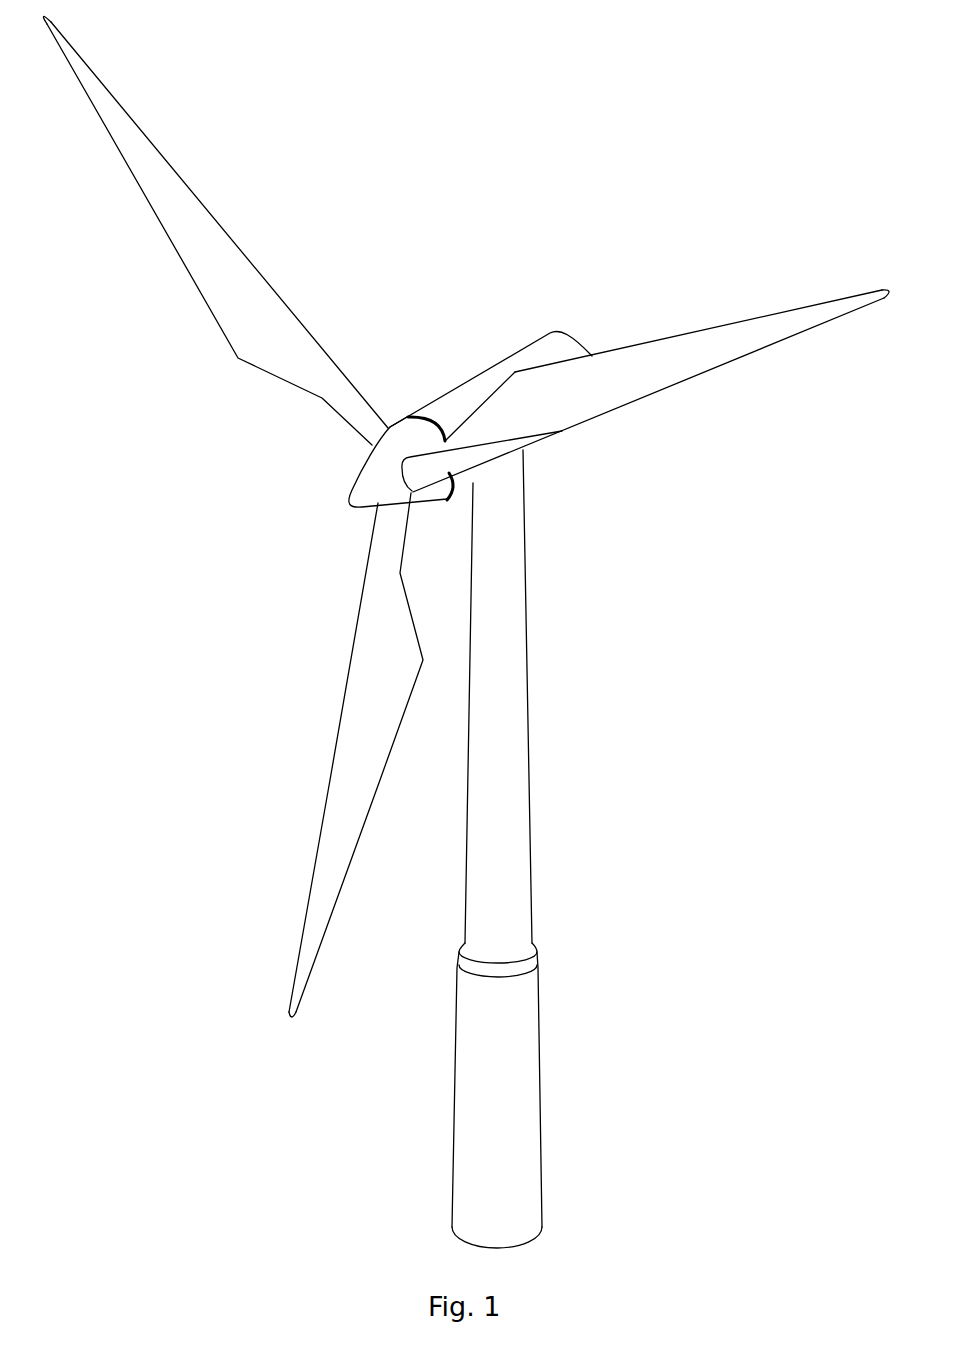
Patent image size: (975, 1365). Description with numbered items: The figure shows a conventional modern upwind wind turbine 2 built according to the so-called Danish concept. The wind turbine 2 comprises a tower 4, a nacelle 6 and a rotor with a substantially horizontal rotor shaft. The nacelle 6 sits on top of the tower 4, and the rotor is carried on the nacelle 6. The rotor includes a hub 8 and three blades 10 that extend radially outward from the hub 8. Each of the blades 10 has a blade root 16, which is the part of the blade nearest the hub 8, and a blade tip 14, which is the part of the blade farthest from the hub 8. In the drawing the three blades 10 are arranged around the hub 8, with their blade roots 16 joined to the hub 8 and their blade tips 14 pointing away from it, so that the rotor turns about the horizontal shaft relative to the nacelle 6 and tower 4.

The wind turbine 2 is at (624, 787).
The tower 4 is at (517, 706).
The nacelle 6 is at (460, 397).
The hub 8 is at (365, 485).
The blades 10 is at (250, 327).
The blade tip 14 is at (90, 78).
The blade root 16 is at (373, 438).